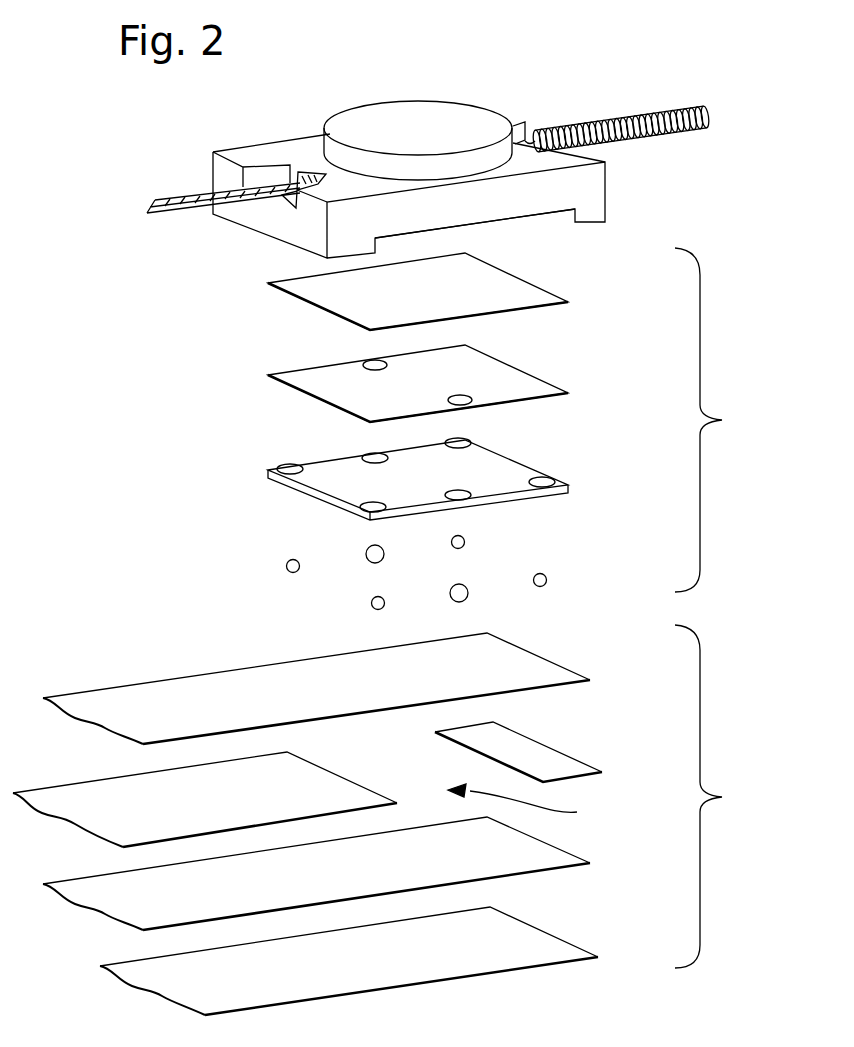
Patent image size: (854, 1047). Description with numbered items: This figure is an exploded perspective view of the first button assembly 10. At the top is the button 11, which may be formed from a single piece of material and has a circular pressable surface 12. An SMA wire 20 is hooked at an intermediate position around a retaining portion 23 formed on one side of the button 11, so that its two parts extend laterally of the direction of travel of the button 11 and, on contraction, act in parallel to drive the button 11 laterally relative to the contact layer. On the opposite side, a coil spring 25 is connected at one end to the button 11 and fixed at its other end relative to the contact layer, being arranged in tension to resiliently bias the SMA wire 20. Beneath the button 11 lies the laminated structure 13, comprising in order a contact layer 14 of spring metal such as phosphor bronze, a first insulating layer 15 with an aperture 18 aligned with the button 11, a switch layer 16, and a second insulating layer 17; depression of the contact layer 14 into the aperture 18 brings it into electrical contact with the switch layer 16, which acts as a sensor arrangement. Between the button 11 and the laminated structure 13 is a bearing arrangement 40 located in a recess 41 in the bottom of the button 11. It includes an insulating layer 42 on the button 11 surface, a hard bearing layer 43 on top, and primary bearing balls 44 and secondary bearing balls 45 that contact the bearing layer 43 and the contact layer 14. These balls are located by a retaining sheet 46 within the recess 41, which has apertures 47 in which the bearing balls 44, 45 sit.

The first button assembly 10 is at (546, 79).
The button 11 is at (597, 187).
The pressable surface 12 is at (451, 112).
The laminated structure 13 is at (716, 796).
The contact layer 14 is at (170, 704).
The first insulating layer 15 is at (305, 782).
The switch layer 16 is at (500, 863).
The second insulating layer 17 is at (490, 954).
The aperture 18 is at (525, 804).
The SMA wire 20 is at (173, 196).
The retaining portion 23 is at (310, 172).
The coil spring 25 is at (710, 121).
The bearing arrangement 40 is at (716, 420).
The recess 41 is at (540, 217).
The insulating layer 42 is at (348, 302).
The bearing layer 43 is at (487, 373).
The primary bearing balls 44 is at (367, 555).
The secondary bearing balls 45 is at (289, 565).
The retaining sheet 46 is at (503, 473).
The apertures 47 is at (288, 468).